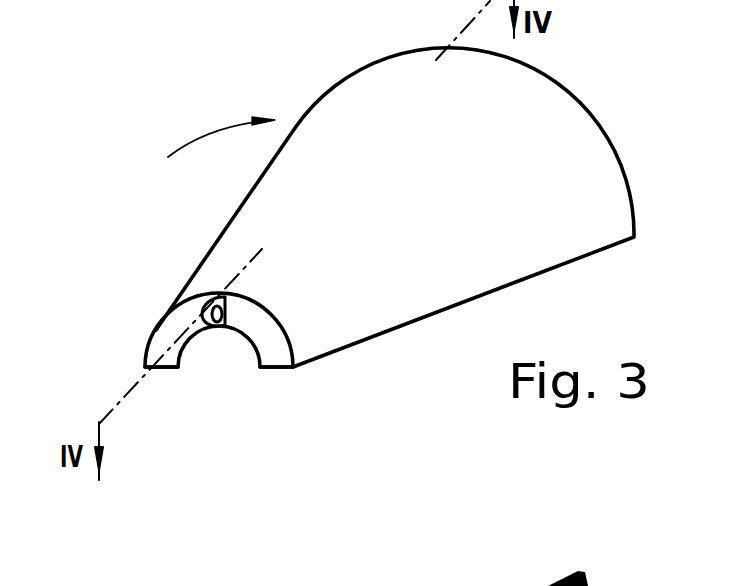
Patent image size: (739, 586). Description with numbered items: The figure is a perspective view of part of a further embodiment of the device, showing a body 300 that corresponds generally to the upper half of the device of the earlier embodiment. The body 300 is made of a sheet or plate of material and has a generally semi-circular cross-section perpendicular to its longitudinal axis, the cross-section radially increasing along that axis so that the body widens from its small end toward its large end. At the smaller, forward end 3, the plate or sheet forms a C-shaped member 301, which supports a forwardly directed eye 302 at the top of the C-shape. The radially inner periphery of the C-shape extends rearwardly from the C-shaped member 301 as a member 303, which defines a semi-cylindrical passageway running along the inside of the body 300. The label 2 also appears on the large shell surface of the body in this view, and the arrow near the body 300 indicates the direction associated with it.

The shell body 2 is at (463, 197).
The forward end 3 is at (155, 332).
The body 300 is at (200, 158).
The C-shaped member 301 is at (277, 358).
The eye 302 is at (213, 330).
The member 303 is at (193, 350).